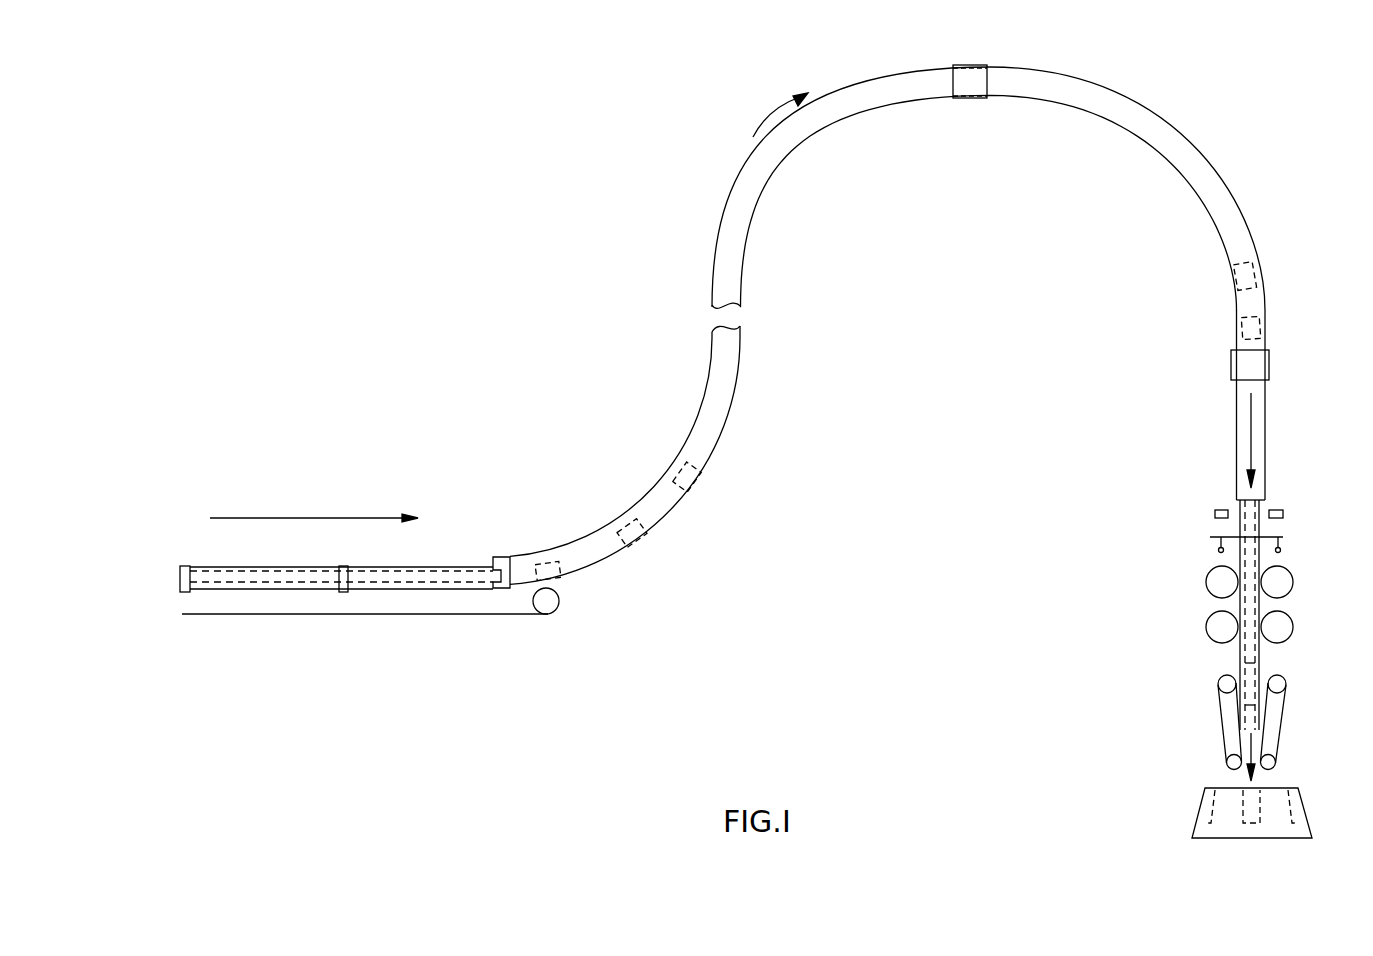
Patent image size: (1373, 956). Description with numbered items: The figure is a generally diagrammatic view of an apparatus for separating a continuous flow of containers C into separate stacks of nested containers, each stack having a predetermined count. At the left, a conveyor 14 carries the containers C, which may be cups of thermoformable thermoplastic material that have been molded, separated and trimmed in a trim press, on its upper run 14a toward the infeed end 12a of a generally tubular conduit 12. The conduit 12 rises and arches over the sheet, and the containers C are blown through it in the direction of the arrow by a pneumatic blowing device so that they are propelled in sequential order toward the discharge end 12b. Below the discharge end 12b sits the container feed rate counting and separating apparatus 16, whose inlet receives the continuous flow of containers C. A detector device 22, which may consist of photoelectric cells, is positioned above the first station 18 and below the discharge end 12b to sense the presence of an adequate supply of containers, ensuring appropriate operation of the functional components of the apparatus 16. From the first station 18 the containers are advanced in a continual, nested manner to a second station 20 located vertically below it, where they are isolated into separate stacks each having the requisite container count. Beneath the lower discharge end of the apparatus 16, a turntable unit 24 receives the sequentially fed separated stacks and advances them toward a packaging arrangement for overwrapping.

The tubular conduit 12 is at (760, 216).
The infeed end 12a is at (500, 557).
The discharge end 12b is at (1267, 500).
The conveyor 14 is at (372, 615).
The upper run 14a is at (265, 587).
The container feed rate counting and separating apparatus 16 is at (1175, 615).
The first station 18 is at (1302, 594).
The second station 20 is at (1300, 710).
The detector device 22 is at (1283, 515).
The turntable unit 24 is at (1305, 807).
The containers C is at (547, 583).